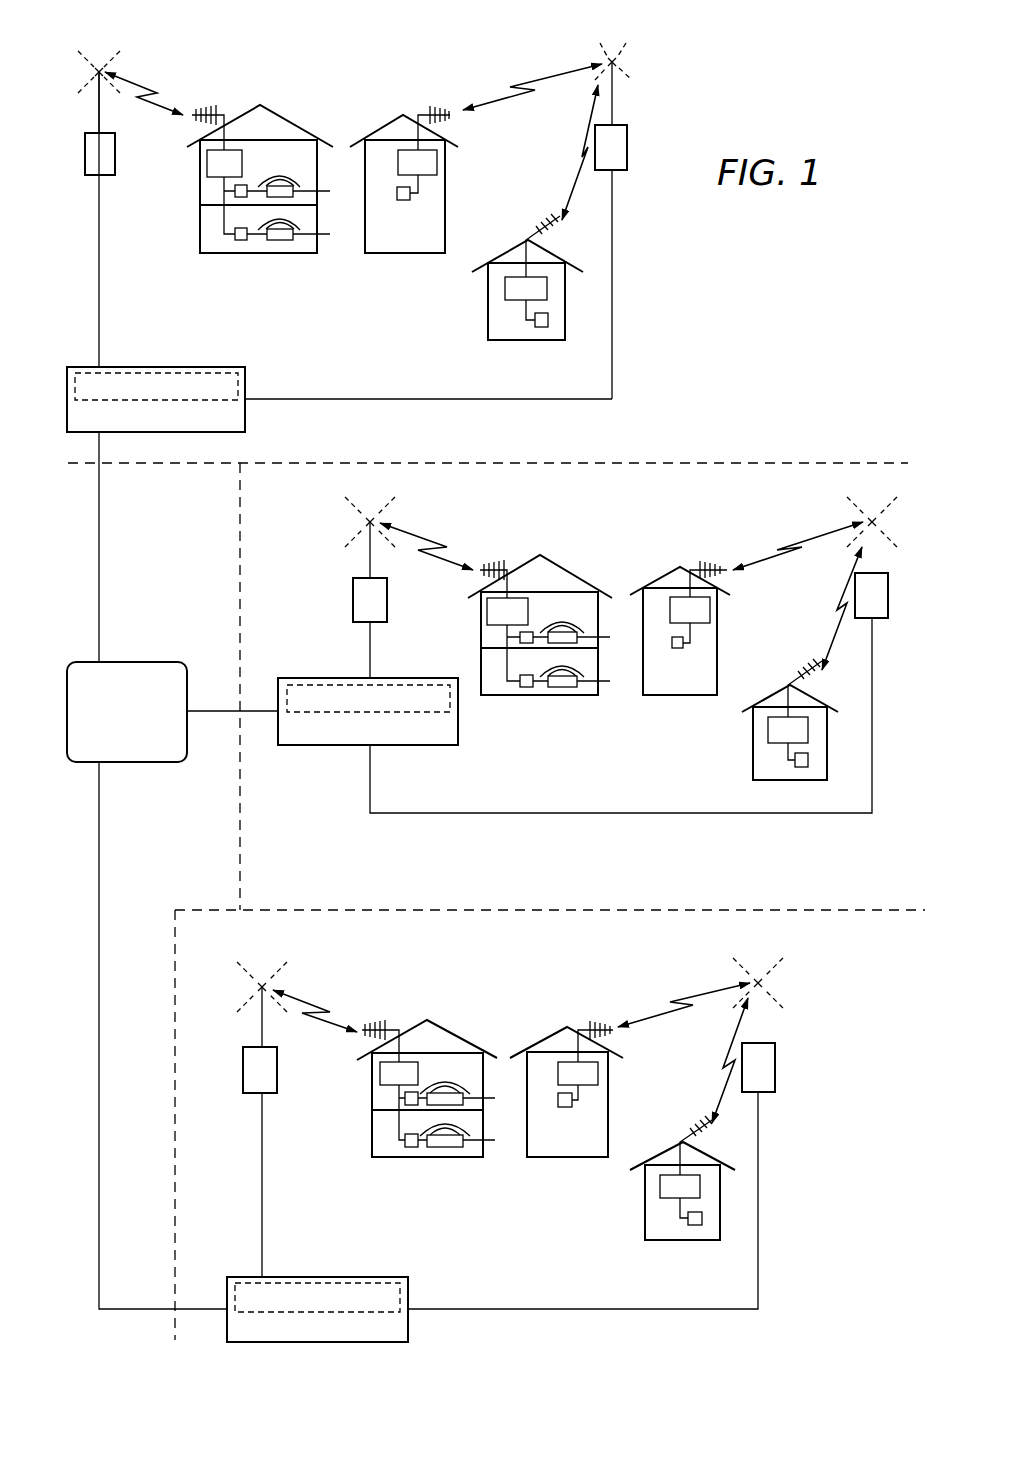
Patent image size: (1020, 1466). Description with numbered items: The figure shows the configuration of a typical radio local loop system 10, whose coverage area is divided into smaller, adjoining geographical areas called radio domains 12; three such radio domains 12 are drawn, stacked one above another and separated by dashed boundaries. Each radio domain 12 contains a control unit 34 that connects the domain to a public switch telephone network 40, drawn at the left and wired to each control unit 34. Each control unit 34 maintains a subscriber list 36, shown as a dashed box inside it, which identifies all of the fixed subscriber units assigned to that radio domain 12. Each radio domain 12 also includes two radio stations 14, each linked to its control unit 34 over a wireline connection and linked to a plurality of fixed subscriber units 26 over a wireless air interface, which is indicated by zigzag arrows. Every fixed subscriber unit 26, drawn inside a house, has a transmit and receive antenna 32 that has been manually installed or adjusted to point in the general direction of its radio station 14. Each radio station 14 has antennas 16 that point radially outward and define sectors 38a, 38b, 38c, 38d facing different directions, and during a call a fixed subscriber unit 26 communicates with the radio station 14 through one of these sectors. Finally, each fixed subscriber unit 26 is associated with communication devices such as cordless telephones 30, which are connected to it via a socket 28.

The radio local loop system 10 is at (742, 81).
The radio domain 12 is at (642, 300).
The radio station 14 is at (115, 152).
The antenna 16 is at (100, 112).
The fixed subscriber unit 26 is at (207, 163).
The socket 28 is at (235, 197).
The cordless telephone 30 is at (438, 661).
The transmit and receive antenna 32 is at (224, 112).
The control unit 34 is at (245, 423).
The subscriber list 36 is at (150, 372).
The sector 38a is at (108, 110).
The sector 38b is at (84, 50).
The sector 38c is at (112, 52).
The sector 38d is at (116, 70).
The public switch telephone network 40 is at (126, 661).